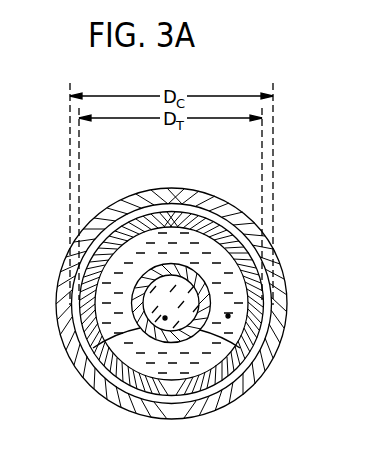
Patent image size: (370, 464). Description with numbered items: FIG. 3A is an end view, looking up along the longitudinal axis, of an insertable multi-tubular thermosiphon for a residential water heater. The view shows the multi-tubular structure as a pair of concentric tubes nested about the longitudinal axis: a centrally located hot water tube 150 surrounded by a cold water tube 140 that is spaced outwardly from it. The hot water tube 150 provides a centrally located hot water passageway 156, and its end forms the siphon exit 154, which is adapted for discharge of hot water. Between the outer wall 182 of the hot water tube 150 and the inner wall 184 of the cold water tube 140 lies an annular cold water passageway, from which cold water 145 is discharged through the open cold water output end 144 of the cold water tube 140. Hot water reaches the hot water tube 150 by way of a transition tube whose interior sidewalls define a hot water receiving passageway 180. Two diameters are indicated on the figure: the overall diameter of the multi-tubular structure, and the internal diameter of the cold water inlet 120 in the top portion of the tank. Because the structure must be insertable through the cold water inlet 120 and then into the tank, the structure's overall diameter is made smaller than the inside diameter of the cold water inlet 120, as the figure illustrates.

The cold water inlet 120 is at (93, 379).
The cold water tube 140 is at (221, 342).
The cold water output end 144 is at (258, 312).
The cold water 145 is at (228, 316).
The hot water tube 150 is at (165, 338).
The siphon exit 154 is at (143, 312).
The hot water passageway 156 is at (168, 322).
The hot water receiving passageway 180 is at (175, 242).
The outer wall of the hot water tube 182 is at (93, 348).
The inner wall of the cold water tube 184 is at (250, 332).